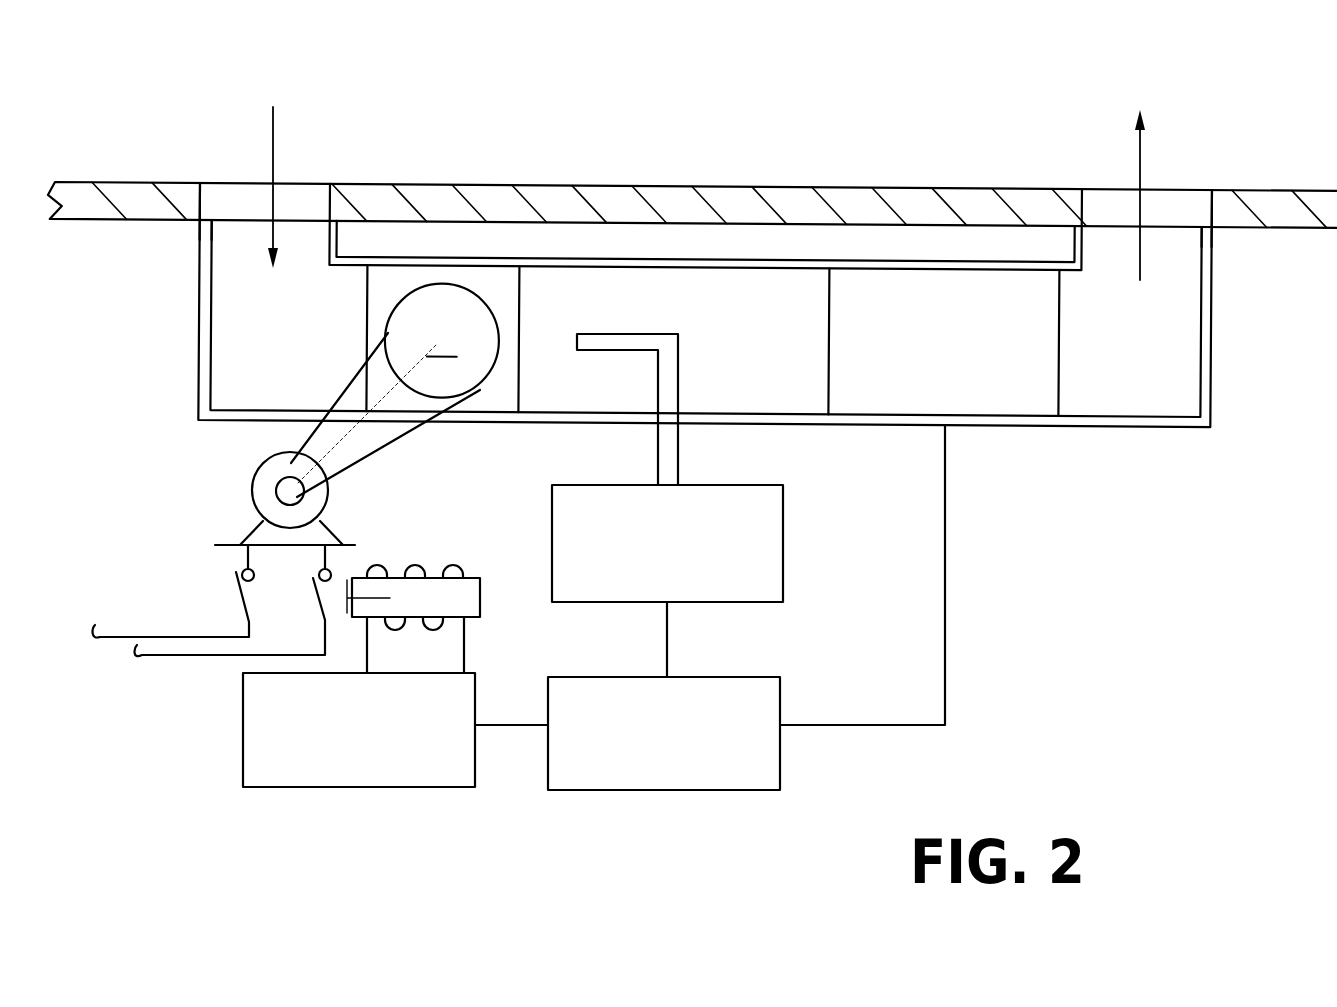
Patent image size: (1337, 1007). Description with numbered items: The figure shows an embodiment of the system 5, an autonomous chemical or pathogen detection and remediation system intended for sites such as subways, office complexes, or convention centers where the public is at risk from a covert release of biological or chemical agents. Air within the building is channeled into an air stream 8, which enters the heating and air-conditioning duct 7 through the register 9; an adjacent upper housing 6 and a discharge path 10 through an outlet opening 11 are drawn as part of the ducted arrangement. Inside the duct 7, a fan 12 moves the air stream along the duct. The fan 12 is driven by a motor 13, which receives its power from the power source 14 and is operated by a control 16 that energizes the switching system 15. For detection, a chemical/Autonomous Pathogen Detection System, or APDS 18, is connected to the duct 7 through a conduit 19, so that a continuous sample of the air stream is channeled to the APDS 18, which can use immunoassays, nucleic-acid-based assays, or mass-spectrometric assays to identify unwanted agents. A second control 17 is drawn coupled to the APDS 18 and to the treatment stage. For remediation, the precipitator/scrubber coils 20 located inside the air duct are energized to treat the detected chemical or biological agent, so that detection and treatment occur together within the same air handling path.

The system 5 is at (737, 130).
The housing duct 6 is at (604, 185).
The heating and air-conditioning duct 7 is at (768, 342).
The air stream 8 is at (349, 131).
The register 9 is at (233, 200).
The outlet air flow 10 is at (1138, 166).
The outlet opening 11 is at (1177, 213).
The fan 12 is at (395, 390).
The motor 13 is at (252, 487).
The power source 14 is at (190, 655).
The switching system 15 is at (433, 578).
The control 16 is at (243, 762).
The system control unit 17 is at (781, 697).
The Autonomous Pathogen Detection System (APDS) 18 is at (783, 548).
The conduit 19 is at (599, 333).
The precipitator/scrubber coils 20 is at (1062, 368).